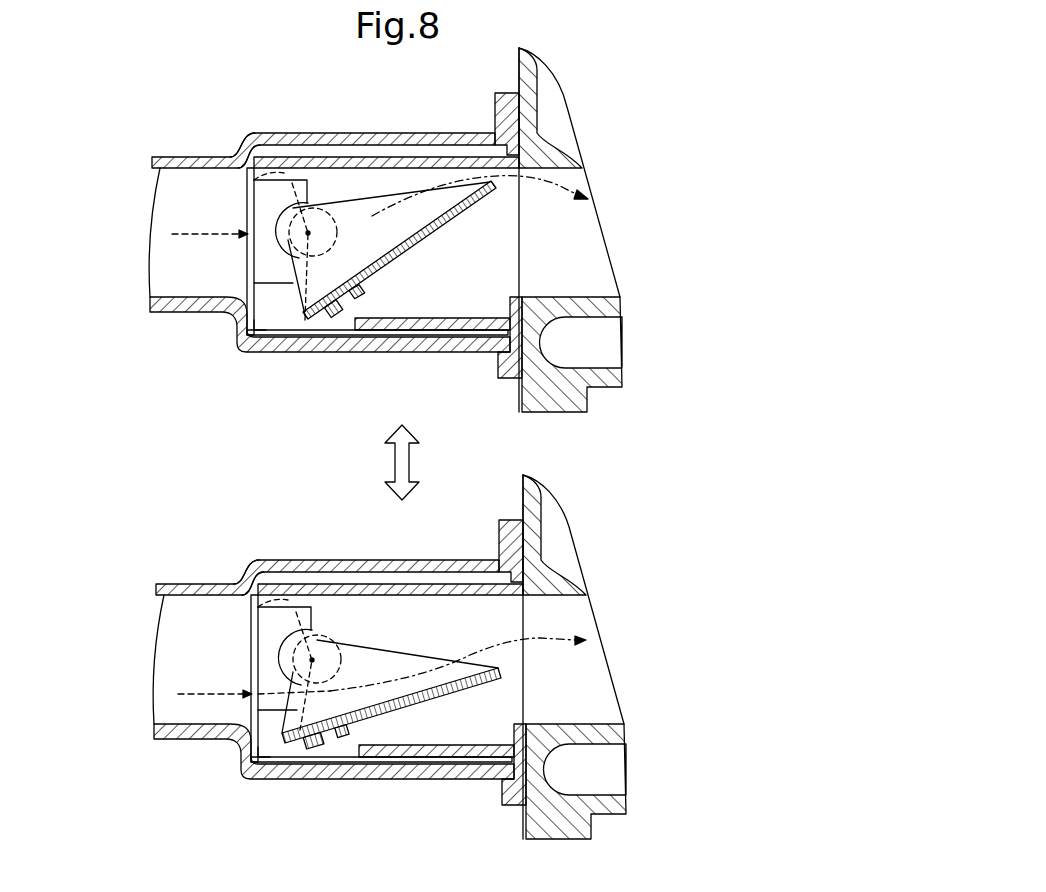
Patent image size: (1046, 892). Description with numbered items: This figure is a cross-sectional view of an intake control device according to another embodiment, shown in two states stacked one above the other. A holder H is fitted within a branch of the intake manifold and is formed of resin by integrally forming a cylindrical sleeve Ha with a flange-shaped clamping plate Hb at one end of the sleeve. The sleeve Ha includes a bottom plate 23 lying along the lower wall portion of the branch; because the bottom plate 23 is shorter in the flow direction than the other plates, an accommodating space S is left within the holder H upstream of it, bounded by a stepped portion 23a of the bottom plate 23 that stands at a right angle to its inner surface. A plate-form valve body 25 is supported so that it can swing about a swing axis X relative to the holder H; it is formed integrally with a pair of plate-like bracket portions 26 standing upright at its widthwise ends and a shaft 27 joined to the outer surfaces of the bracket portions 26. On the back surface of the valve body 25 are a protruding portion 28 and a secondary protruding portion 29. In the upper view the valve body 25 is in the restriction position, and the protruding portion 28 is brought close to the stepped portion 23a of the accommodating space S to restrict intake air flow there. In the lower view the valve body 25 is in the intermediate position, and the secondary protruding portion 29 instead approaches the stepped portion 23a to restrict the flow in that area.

The swing axis X is at (233, 140).
The sleeve Ha is at (267, 175).
The holder H is at (357, 150).
The clamping plate Hb is at (512, 140).
The bracket portions 26 is at (428, 204).
The valve body 25 is at (465, 222).
The secondary protruding portion 29 is at (364, 296).
The accommodating space S is at (256, 323).
The shaft 27 is at (294, 315).
The stepped portion 23a is at (340, 323).
The bottom plate 23 is at (443, 333).
The protruding portion 28 is at (338, 323).